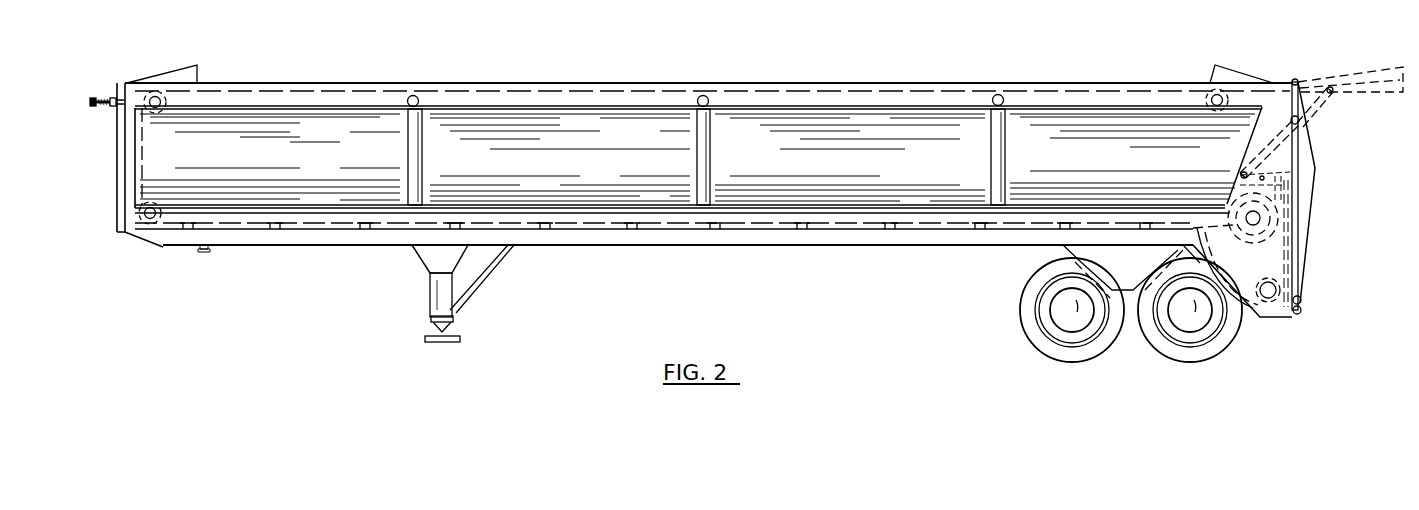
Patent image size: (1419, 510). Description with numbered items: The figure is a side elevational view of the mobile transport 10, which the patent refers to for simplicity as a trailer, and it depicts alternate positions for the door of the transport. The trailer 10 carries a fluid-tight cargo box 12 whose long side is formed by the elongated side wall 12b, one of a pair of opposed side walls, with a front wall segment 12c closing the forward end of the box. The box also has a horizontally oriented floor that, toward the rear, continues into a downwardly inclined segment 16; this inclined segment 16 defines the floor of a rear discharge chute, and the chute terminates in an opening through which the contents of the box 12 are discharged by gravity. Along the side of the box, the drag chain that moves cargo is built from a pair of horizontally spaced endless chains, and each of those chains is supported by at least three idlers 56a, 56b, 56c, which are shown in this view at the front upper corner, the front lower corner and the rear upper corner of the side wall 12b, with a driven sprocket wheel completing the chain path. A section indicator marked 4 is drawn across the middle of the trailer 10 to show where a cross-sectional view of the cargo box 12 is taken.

The section line 4- 4 is at (702, 79).
The mobile transport 10 is at (897, 258).
The cargo box 12 is at (606, 166).
The side wall 12b is at (295, 153).
The front wall segment 12c is at (117, 128).
The downwardly inclined segment 16 is at (1258, 262).
The idler 56a is at (157, 110).
The idler 56b is at (150, 224).
The idler 56c is at (1222, 90).